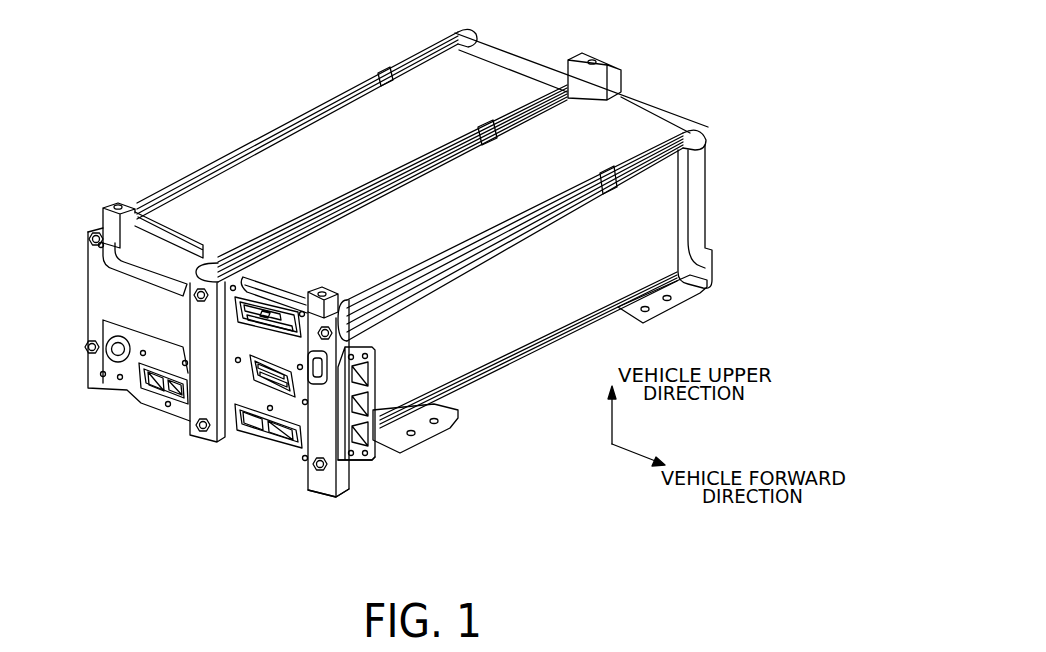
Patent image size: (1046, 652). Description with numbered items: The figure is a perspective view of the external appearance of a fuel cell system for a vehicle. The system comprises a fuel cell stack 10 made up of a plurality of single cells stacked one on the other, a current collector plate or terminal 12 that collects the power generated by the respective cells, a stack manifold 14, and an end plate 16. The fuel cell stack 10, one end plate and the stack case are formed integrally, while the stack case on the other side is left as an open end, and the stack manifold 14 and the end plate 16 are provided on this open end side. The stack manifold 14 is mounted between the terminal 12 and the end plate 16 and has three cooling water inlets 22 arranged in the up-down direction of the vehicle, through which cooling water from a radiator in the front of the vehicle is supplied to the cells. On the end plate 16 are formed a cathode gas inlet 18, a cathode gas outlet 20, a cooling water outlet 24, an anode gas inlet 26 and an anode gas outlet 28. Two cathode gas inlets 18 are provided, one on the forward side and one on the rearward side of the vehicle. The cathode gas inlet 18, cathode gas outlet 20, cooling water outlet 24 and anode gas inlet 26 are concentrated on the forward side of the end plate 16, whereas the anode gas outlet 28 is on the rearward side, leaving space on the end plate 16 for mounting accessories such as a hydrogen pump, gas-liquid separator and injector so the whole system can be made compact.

The fuel cell stack 10 is at (345, 143).
The terminal 12 is at (423, 432).
The stack manifold 14 is at (162, 232).
The end plate 16 is at (348, 494).
The cathode gas inlet 18 is at (277, 447).
The cathode gas outlet 20 is at (283, 320).
The cooling water inlet 22 is at (366, 430).
The cooling water outlet 24 is at (233, 432).
The anode gas inlet 26 is at (360, 345).
The anode gas outlet 28 is at (118, 357).